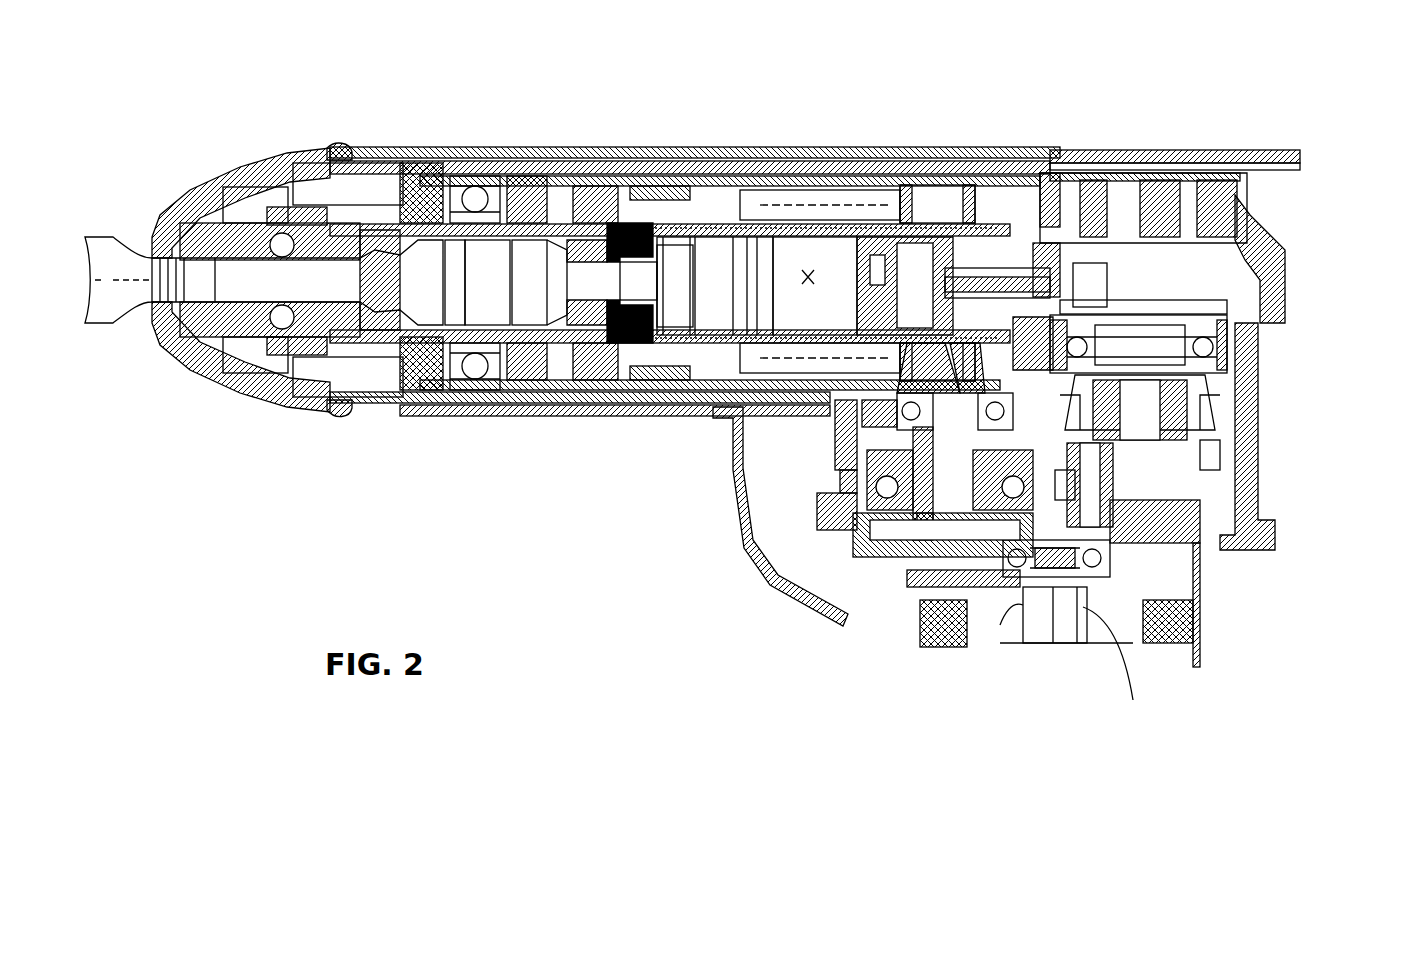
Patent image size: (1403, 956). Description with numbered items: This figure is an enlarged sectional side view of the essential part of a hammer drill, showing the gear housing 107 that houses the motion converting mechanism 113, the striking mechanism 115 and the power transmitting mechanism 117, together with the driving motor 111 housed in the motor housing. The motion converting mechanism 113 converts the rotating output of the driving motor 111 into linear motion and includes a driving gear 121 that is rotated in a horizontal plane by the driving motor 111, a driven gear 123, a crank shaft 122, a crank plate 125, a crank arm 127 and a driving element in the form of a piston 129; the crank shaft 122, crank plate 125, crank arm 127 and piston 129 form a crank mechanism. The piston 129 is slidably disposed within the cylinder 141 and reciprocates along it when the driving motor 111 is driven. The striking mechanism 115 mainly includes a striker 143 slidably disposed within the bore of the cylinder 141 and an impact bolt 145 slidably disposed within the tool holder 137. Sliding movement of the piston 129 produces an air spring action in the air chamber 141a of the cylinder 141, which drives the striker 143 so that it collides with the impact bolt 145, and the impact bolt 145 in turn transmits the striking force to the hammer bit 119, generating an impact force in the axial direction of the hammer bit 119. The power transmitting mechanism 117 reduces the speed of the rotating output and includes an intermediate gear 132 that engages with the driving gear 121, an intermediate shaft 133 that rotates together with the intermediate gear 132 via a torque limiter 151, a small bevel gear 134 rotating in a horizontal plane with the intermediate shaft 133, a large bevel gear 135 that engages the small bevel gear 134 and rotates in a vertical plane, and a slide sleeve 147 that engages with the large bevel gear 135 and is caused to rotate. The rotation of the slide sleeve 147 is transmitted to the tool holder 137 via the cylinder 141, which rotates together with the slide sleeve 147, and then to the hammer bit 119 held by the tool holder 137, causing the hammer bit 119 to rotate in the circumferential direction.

The gear housing 107 is at (608, 147).
The driving motor 111 is at (998, 630).
The motion converting mechanism 113 is at (1132, 262).
The striking mechanism 115 is at (641, 340).
The power transmitting mechanism 117 is at (953, 207).
The hammer bit 119 is at (103, 237).
The driving gear 121 is at (1120, 568).
The crank shaft 122 is at (1170, 432).
The driven gear 123 is at (1222, 470).
The crank plate 125 is at (1173, 312).
The crank arm 127 is at (1022, 283).
The piston 129 is at (863, 228).
The intermediate gear 132 is at (860, 535).
The intermediate shaft 133 is at (947, 490).
The small bevel gear 134 is at (885, 405).
The large bevel gear 135 is at (997, 265).
The tool holder 137 is at (384, 340).
The cylinder 141 is at (740, 235).
The air chamber 141a is at (808, 270).
The striker 143 is at (680, 240).
The impact bolt 145 is at (477, 363).
The slide sleeve 147 is at (927, 197).
The torque limiter 151 is at (835, 463).